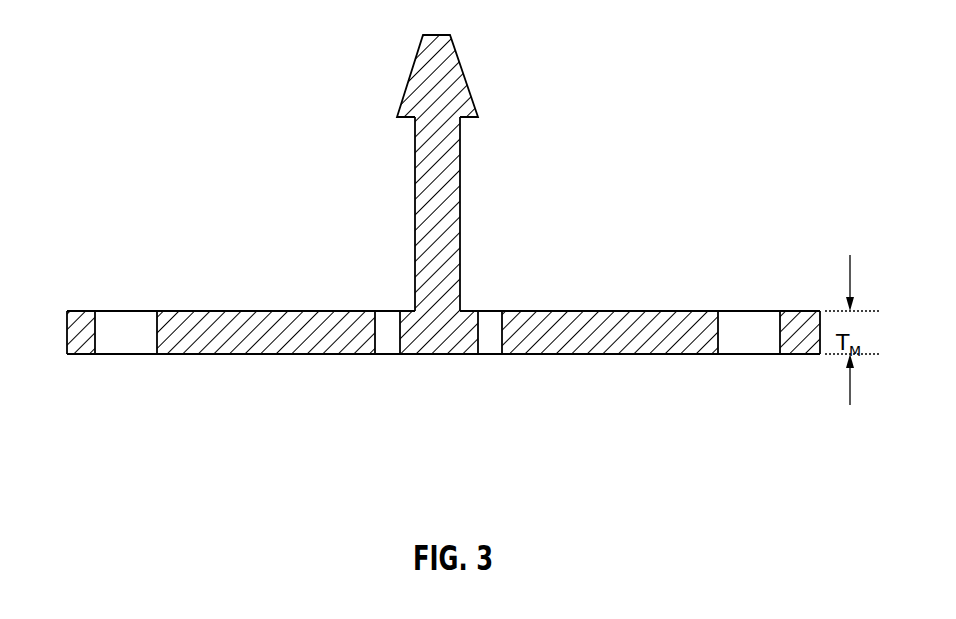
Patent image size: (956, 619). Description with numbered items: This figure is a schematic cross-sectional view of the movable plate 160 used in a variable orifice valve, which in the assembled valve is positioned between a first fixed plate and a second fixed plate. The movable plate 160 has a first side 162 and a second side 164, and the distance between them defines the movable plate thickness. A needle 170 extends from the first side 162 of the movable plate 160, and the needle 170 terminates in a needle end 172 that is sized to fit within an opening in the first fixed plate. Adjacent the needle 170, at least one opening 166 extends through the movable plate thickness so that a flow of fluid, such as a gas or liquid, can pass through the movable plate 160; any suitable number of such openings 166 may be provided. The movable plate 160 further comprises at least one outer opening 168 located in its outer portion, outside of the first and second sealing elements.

The movable plate 160 is at (271, 66).
The first side 162 is at (660, 306).
The second side 164 is at (648, 360).
The opening 166 is at (383, 345).
The outer opening 168 is at (122, 328).
The needle 170 is at (452, 223).
The needle end 172 is at (445, 62).